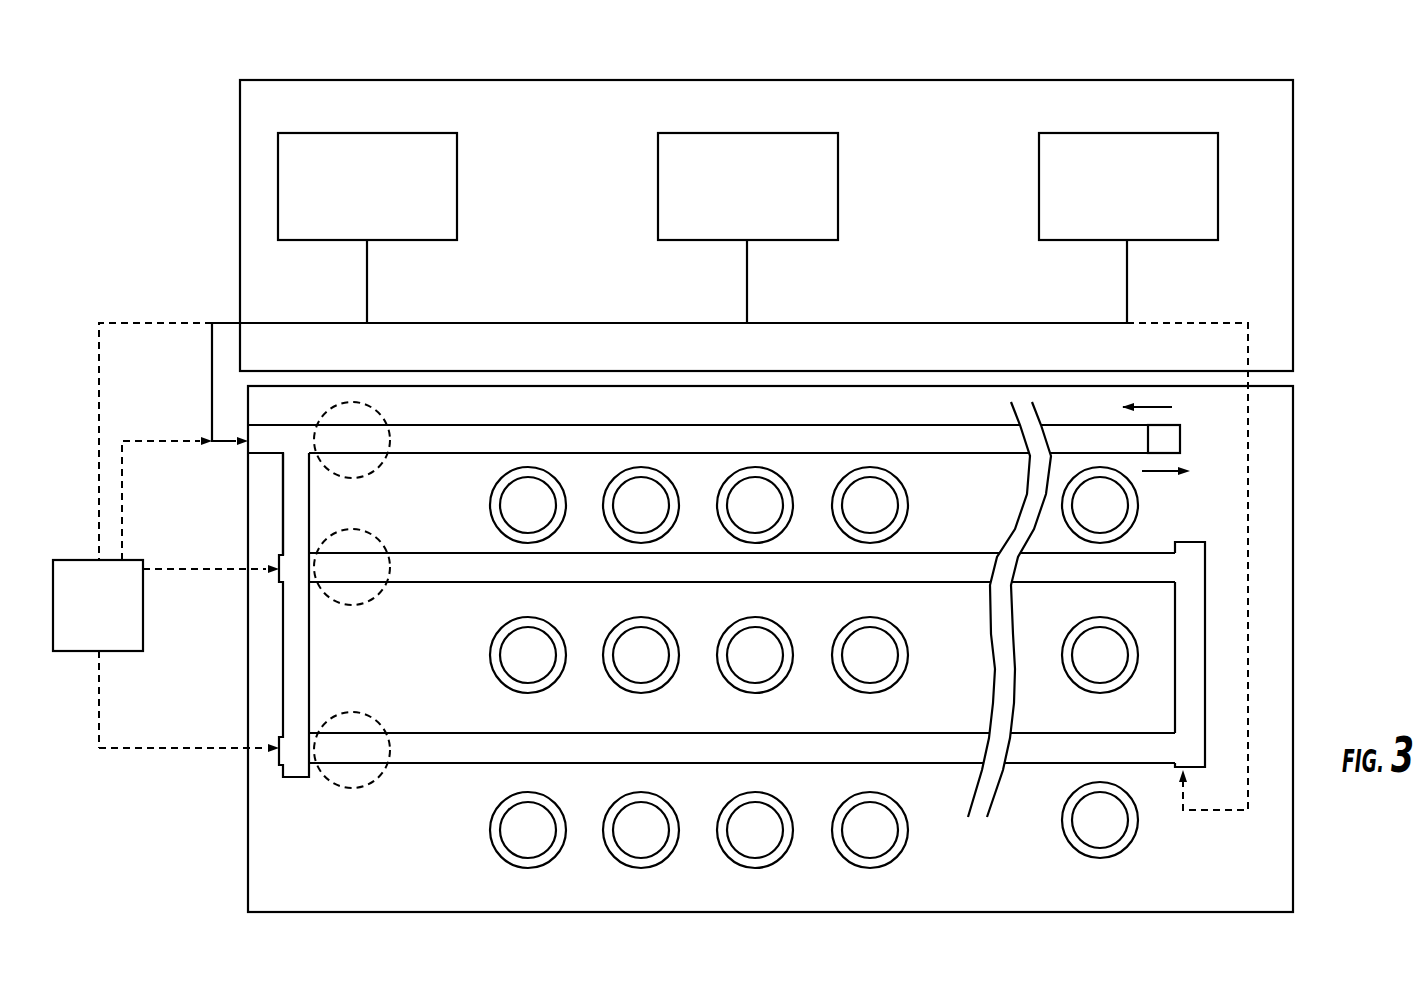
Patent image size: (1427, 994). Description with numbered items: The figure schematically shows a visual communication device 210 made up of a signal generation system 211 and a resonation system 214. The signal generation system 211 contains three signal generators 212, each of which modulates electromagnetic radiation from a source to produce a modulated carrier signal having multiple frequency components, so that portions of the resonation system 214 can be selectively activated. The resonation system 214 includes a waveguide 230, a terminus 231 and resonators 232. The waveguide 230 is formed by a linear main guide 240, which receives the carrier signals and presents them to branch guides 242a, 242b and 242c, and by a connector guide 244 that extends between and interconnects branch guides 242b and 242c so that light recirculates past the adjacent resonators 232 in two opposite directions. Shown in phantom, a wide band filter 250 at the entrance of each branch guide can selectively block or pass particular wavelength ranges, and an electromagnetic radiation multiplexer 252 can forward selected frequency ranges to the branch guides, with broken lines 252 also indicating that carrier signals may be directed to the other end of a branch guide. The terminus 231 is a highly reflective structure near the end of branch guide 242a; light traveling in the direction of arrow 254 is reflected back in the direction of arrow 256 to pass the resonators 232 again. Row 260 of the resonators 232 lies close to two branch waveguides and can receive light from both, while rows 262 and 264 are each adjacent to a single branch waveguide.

The visual communication device 210 is at (568, 58).
The signal generation system 211 is at (377, 80).
The signal generators 212 is at (457, 206).
The resonation system 214 is at (1302, 461).
The waveguide 230 is at (283, 688).
The terminus 231 is at (1180, 438).
The resonators 232 is at (520, 870).
The main guide 240 is at (283, 500).
The branch guide 242a is at (448, 446).
The branch guide 242b is at (449, 577).
The branch guide 242c is at (437, 746).
The connector guide 244 is at (1175, 688).
The wide band filter 250 is at (351, 479).
The electromagnetic radiation multiplexer 252 is at (120, 652).
The arrow 254 is at (1152, 472).
The arrow 256 is at (1170, 407).
The row of resonators 260 is at (481, 514).
The row of resonators 262 is at (481, 638).
The row of resonators 264 is at (480, 829).